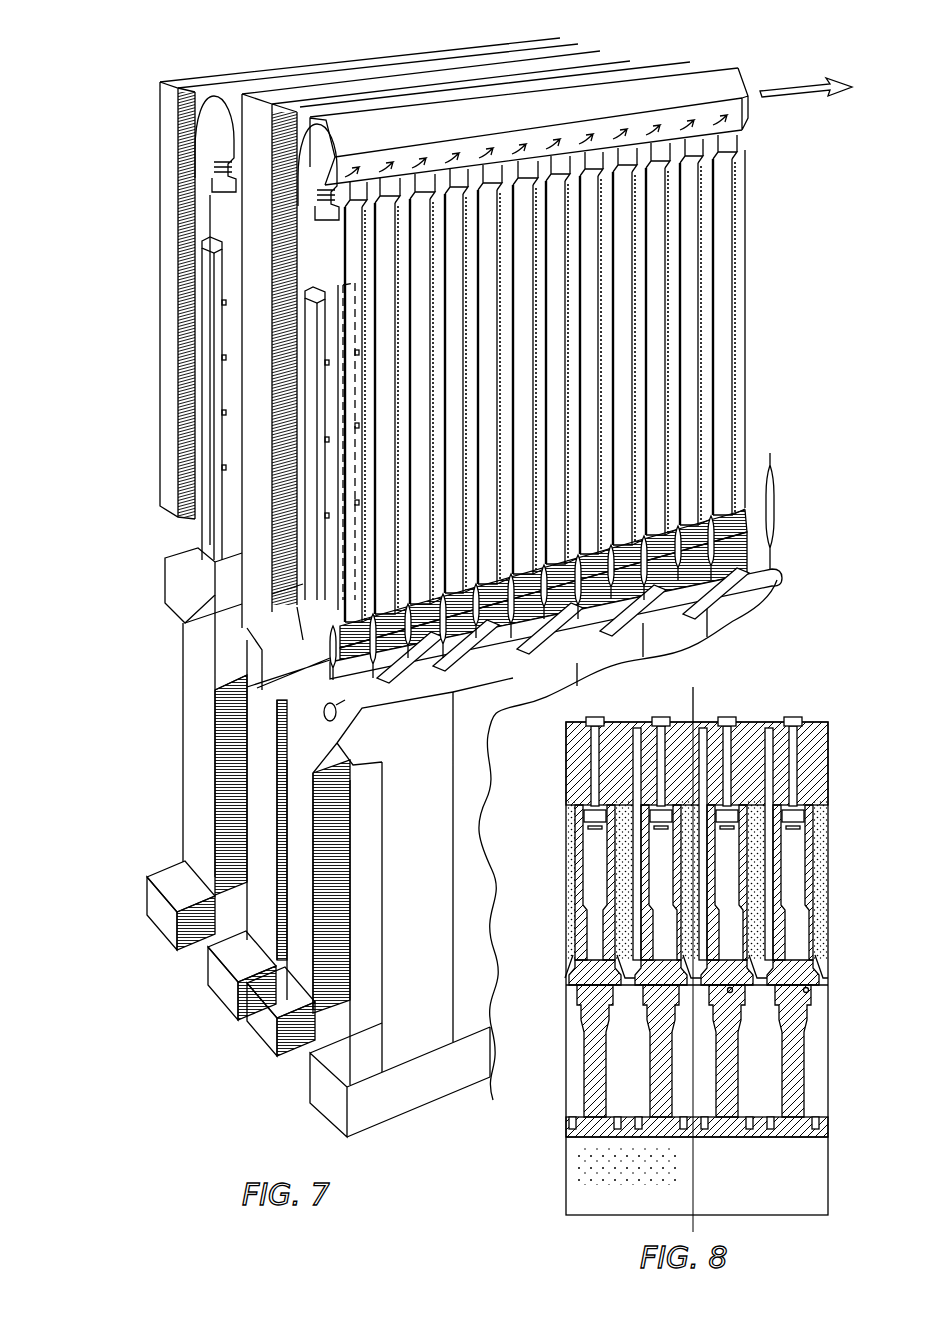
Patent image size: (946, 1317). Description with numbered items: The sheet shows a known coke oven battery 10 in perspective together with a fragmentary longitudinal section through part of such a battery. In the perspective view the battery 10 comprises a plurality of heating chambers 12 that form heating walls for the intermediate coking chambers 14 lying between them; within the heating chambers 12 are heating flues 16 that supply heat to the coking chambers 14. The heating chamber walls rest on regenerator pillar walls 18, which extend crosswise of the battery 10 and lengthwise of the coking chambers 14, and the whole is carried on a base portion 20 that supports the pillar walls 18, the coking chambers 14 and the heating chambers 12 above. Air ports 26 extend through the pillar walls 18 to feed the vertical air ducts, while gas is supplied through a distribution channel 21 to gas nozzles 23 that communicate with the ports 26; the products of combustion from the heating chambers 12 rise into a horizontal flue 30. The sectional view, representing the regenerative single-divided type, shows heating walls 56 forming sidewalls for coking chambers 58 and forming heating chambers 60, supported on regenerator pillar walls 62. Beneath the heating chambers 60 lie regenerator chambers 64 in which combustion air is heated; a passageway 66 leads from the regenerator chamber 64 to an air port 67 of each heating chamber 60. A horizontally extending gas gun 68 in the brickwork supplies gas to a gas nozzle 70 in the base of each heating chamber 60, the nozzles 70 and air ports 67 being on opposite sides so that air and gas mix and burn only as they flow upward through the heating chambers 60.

In FIG. 7, the coke oven battery 10 is at (124, 137).
In FIG. 8, the coke oven battery 10 is at (864, 742).
In FIG. 7, the heating chamber 12 is at (457, 205).
In FIG. 7, the coking chamber 14 is at (263, 118).
In FIG. 7, the heating flue 16 is at (332, 274).
In FIG. 7, the regenerator pillar wall 18 is at (183, 727).
In FIG. 7, the base portion 20 is at (152, 905).
In FIG. 7, the distribution channel 21 is at (323, 722).
In FIG. 7, the gas nozzle 23 is at (407, 612).
In FIG. 7, the air port 26 is at (385, 672).
In FIG. 7, the horizontal flue 30 is at (213, 100).
In FIG. 8, the heating wall 56 is at (580, 848).
In FIG. 8, the coking chamber 58 is at (625, 864).
In FIG. 8, the heating chamber 60 is at (604, 822).
In FIG. 8, the regenerator pillar wall 62 is at (594, 1008).
In FIG. 8, the regenerator chamber 64 is at (688, 1078).
In FIG. 8, the passageway 66 is at (604, 990).
In FIG. 8, the air port 67 is at (603, 950).
In FIG. 8, the gas gun 68 is at (730, 992).
In FIG. 8, the gas nozzle 70 is at (800, 985).